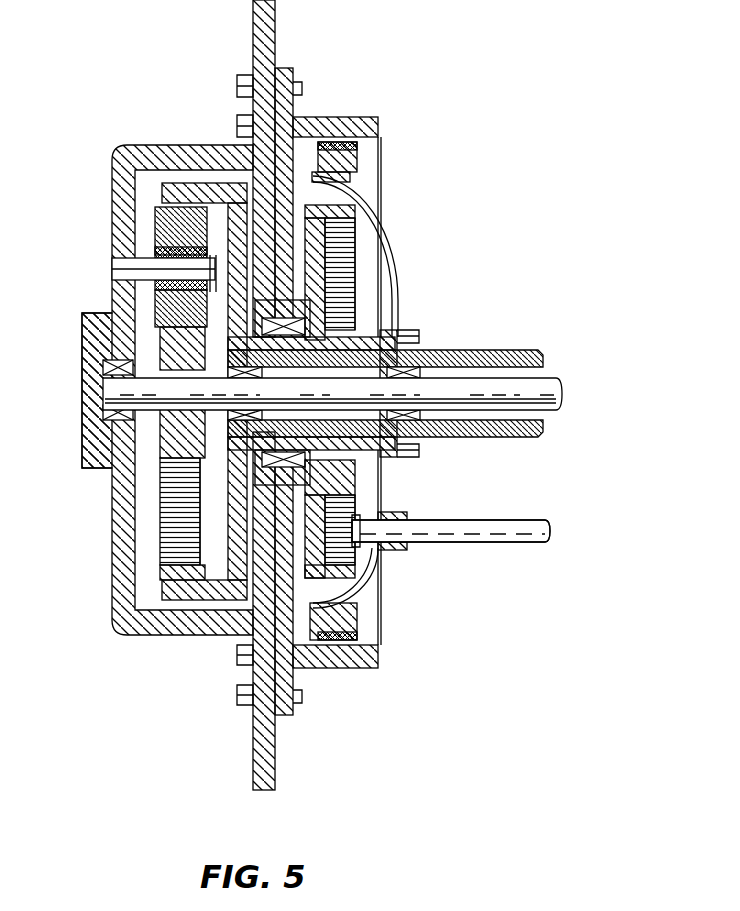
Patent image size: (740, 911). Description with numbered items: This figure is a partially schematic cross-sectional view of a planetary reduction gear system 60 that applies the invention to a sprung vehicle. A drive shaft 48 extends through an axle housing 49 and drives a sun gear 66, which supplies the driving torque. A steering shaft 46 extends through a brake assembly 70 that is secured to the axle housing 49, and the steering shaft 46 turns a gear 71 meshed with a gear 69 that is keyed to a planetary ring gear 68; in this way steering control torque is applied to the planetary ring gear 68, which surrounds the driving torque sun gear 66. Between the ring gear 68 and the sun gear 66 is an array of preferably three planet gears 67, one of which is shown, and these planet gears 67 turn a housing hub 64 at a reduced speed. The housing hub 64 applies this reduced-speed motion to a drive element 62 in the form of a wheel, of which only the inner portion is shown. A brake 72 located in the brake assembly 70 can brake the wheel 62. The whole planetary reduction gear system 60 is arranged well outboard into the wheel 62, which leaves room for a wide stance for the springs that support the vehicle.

The drive assembly 60 is at (459, 88).
The drive element 62 is at (255, 30).
The housing hub 64 is at (115, 628).
The sun gear 66 is at (160, 440).
The planet gears 67 is at (165, 222).
The planetary ring gear 68 is at (175, 548).
The gear 69 is at (350, 240).
The brake assembly 70 is at (397, 290).
The gear 71 is at (350, 505).
The brake 72 is at (357, 162).
The steering shaft 46 is at (493, 520).
The drive shaft 48 is at (555, 380).
The axle housing 49 is at (485, 348).